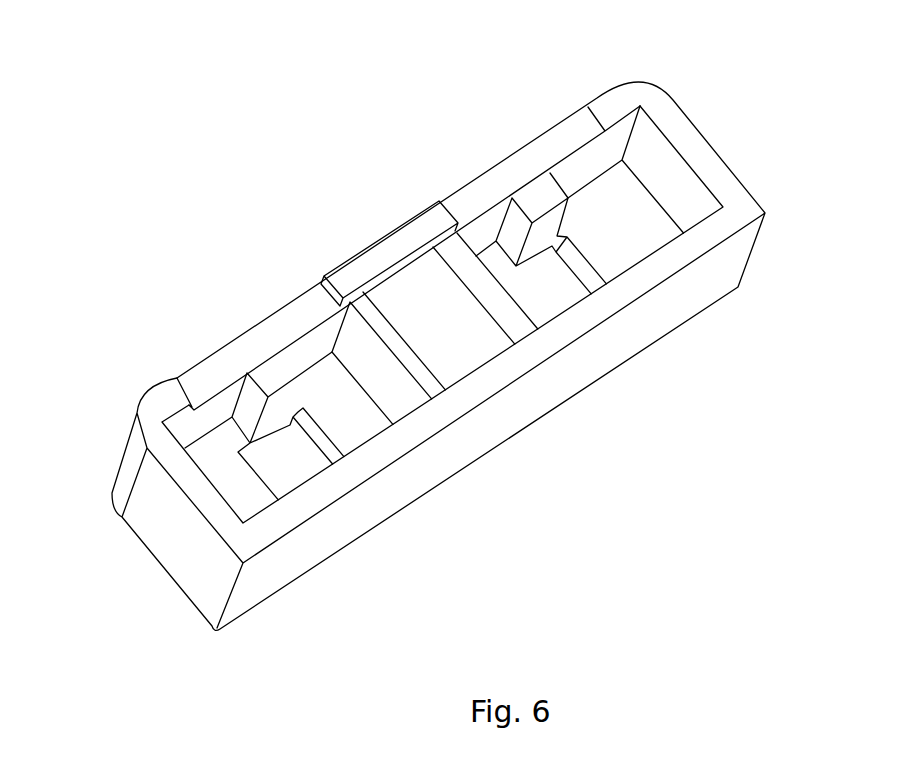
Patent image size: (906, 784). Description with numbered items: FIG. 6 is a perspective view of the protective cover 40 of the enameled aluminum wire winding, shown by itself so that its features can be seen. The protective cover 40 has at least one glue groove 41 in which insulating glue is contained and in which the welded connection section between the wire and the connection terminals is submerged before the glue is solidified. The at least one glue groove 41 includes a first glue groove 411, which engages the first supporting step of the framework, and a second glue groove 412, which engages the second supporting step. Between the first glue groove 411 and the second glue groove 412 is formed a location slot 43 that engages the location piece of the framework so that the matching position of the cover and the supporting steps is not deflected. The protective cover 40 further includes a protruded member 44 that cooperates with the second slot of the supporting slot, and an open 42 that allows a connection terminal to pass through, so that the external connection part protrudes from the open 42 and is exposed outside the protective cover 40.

The protective cover 40 is at (90, 58).
The glue groove 41 is at (598, 487).
The first glue groove 411 is at (362, 420).
The second glue groove 412 is at (558, 273).
The open 42 is at (213, 377).
The location slot 43 is at (443, 320).
The protruded member 44 is at (278, 377).